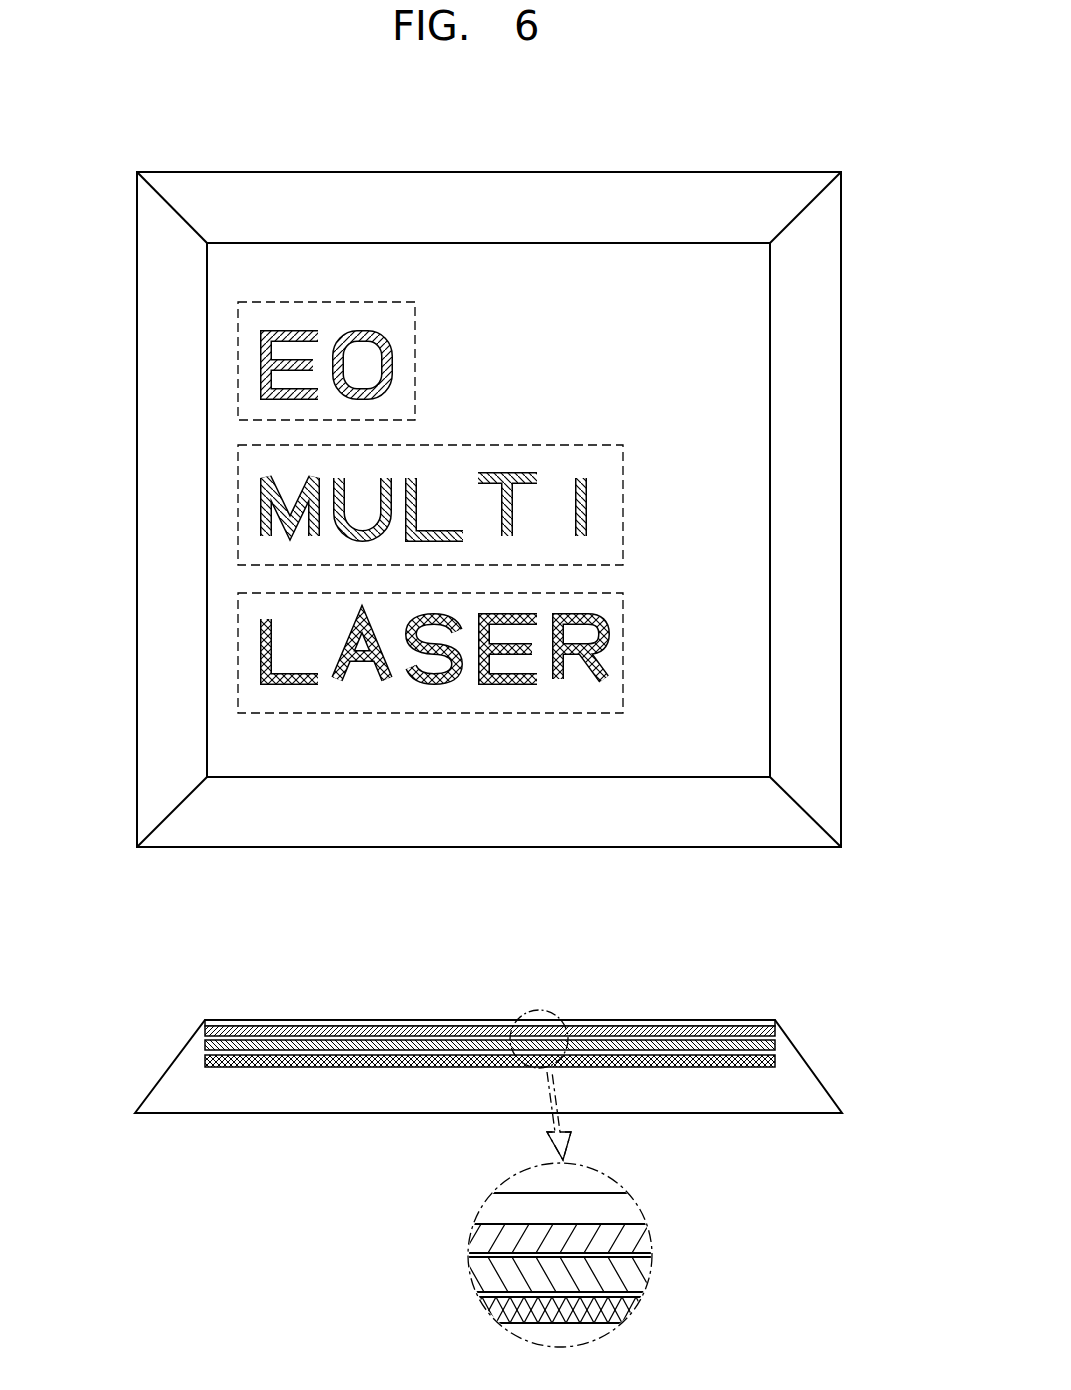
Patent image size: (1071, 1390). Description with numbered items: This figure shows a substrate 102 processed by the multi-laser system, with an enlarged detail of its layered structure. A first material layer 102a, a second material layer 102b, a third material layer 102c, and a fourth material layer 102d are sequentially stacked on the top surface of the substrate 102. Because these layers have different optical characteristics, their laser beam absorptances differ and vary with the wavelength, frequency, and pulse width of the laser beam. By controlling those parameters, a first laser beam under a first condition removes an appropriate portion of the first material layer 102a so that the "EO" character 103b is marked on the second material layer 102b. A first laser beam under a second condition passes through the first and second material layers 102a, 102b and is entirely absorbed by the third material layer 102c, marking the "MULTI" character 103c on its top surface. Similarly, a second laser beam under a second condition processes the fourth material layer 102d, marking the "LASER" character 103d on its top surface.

The substrate 102 is at (717, 172).
The "EO" character 103b is at (238, 340).
The "MULTI" character 103c is at (238, 500).
The "LASER" character 103d is at (238, 645).
The first material layer 102a is at (230, 1023).
The second material layer 102b is at (209, 1031).
The third material layer 102c is at (207, 1045).
The fourth material layer 102d is at (205, 1061).